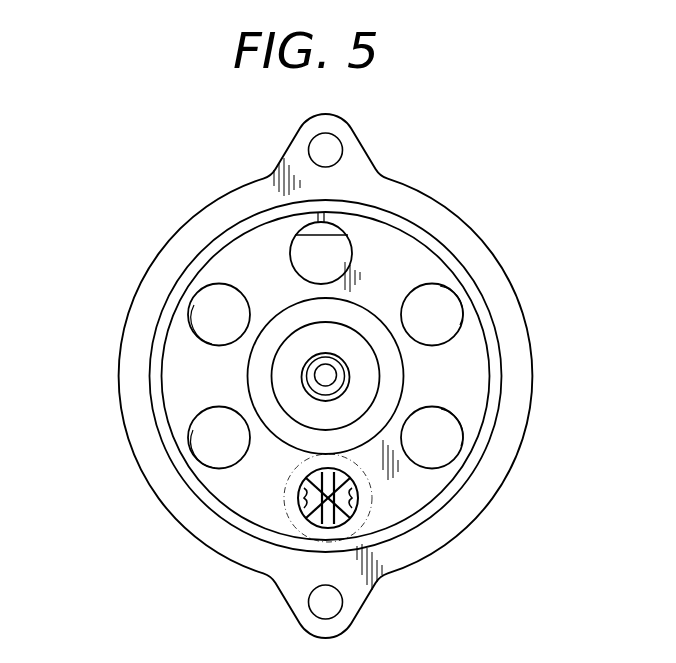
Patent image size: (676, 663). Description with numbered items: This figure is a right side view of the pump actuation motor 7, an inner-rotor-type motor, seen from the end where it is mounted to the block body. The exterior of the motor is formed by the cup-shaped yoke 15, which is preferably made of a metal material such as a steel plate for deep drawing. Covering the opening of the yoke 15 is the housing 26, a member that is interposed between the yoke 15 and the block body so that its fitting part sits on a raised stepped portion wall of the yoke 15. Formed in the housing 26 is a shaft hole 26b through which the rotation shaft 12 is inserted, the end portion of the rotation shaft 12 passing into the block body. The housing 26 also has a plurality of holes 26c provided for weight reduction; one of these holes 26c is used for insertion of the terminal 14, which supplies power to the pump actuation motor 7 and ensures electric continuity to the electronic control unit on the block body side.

The pump actuation motor 7 is at (176, 206).
The rotation shaft 12 is at (337, 361).
The terminal 14 is at (300, 504).
The yoke 15 is at (488, 258).
The housing 26 is at (457, 385).
The shaft hole 26b is at (247, 376).
The holes 26c is at (357, 498).